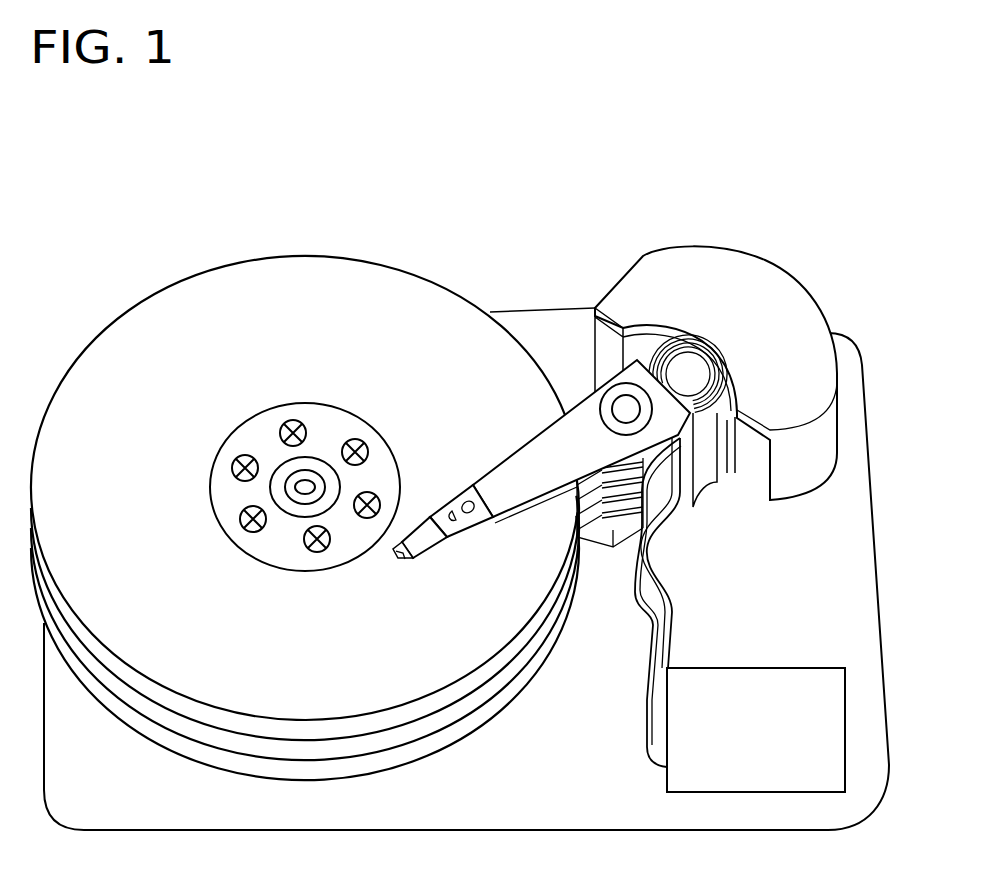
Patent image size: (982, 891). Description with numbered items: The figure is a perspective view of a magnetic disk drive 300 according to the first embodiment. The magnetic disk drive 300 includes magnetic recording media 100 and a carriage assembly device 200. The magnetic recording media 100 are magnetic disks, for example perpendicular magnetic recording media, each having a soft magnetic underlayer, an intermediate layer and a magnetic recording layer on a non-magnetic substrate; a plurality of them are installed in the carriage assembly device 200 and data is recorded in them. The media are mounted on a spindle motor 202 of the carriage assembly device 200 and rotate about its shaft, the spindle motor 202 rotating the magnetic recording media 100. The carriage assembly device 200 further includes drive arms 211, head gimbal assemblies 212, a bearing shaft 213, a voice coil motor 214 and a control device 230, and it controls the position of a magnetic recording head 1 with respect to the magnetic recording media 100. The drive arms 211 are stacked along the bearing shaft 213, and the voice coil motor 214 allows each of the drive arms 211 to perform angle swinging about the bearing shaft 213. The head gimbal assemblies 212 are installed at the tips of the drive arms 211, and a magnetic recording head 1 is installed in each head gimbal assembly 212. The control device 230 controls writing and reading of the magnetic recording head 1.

The magnetic disk drive 300 is at (600, 161).
The magnetic recording media 100 is at (220, 276).
The spindle motor 202 is at (307, 480).
The carriage assembly device 200 is at (776, 262).
The drive arms 211 is at (521, 453).
The head gimbal assemblies 212 is at (416, 520).
The bearing shaft 213 is at (623, 404).
The voice coil motor 214 is at (723, 473).
The magnetic recording head 1 is at (409, 560).
The control device 230 is at (753, 792).